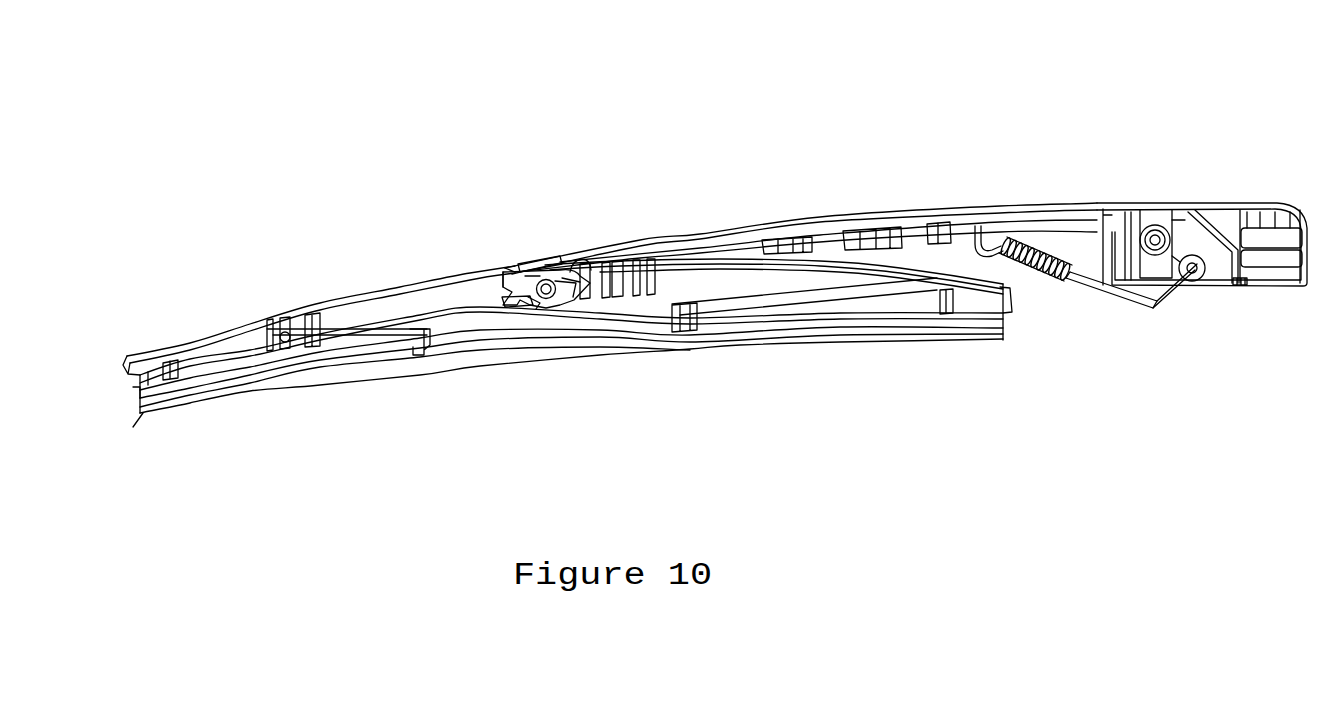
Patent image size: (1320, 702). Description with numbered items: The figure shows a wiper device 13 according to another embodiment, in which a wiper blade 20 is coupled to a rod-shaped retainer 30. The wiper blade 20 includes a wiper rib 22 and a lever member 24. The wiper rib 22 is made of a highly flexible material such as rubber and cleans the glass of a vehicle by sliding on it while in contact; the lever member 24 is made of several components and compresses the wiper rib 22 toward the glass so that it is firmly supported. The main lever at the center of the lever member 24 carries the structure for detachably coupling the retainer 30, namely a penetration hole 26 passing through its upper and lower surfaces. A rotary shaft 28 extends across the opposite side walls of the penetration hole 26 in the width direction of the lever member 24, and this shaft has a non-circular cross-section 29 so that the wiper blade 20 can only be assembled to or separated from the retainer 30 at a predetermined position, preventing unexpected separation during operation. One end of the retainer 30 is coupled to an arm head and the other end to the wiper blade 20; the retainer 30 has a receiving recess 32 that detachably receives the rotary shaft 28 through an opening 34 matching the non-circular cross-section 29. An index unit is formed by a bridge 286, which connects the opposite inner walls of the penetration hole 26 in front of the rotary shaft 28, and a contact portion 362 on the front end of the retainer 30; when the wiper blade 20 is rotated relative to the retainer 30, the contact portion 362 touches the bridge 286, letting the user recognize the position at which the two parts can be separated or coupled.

The wiper device 13 is at (778, 121).
The wiper blade 20 is at (419, 278).
The wiper rib 22 is at (378, 373).
The lever member 24 is at (368, 292).
The penetration hole 26 is at (510, 271).
The rotary shaft 28 is at (550, 300).
The non-circular cross-section 29 is at (546, 299).
The retainer 30 is at (651, 232).
The receiving recess 32 is at (565, 291).
The opening 34 is at (500, 306).
The bridge 286 is at (536, 304).
The contact portion 362 is at (520, 262).